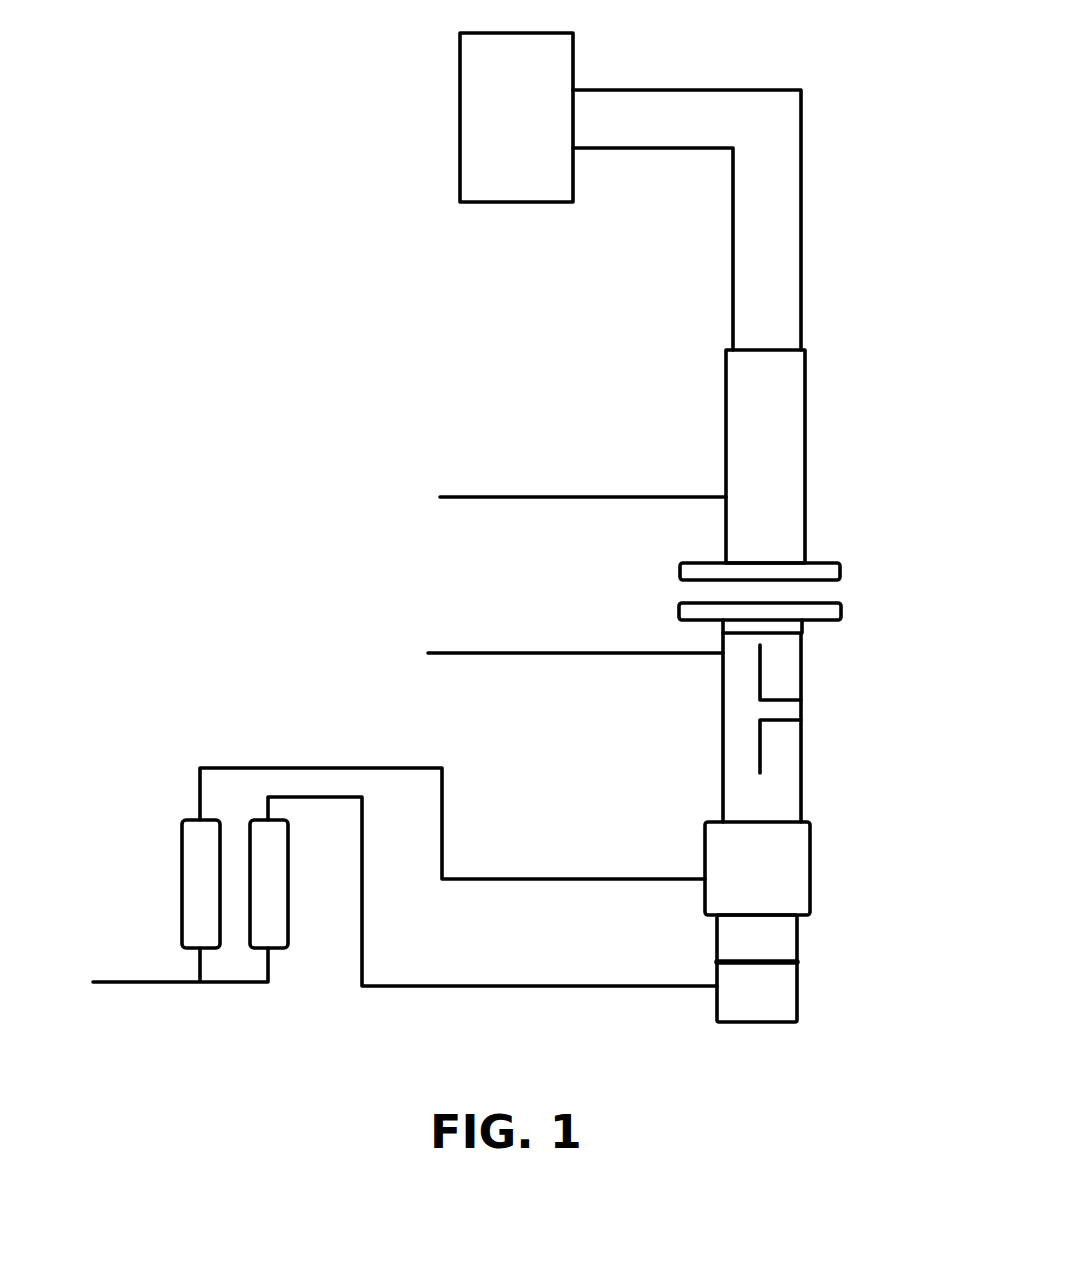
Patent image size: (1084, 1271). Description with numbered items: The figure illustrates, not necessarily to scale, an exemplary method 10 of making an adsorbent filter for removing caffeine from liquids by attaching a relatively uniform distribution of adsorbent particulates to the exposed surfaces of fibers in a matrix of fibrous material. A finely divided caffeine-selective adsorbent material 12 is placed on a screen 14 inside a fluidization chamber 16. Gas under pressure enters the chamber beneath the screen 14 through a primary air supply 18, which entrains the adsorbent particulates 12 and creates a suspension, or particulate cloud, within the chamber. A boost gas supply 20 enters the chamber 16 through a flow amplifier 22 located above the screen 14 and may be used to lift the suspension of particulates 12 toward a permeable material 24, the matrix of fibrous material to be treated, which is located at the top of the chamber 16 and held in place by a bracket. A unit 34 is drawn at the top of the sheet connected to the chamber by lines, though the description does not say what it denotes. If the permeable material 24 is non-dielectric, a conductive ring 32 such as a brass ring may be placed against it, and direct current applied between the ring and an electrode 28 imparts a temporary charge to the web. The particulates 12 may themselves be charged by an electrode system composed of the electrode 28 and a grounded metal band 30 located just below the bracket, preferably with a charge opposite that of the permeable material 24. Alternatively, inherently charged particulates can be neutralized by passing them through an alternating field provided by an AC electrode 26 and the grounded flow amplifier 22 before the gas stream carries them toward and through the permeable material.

The exemplary method of making an adsorbent filter 10 is at (865, 338).
The caffeine-selective adsorbent material 12 is at (783, 935).
The screen 14 is at (773, 965).
The fluidization chamber 16 is at (722, 735).
The primary air supply 18 is at (580, 988).
The boost gas supply 20 is at (610, 878).
The flow amplifier 22 is at (805, 848).
The permeable material 24 is at (832, 593).
The AC electrode 26 is at (800, 732).
The electrode 28 is at (803, 708).
The grounded metal band 30 is at (802, 623).
The conductive ring 32 is at (843, 580).
The pump / supply unit 34 is at (563, 67).